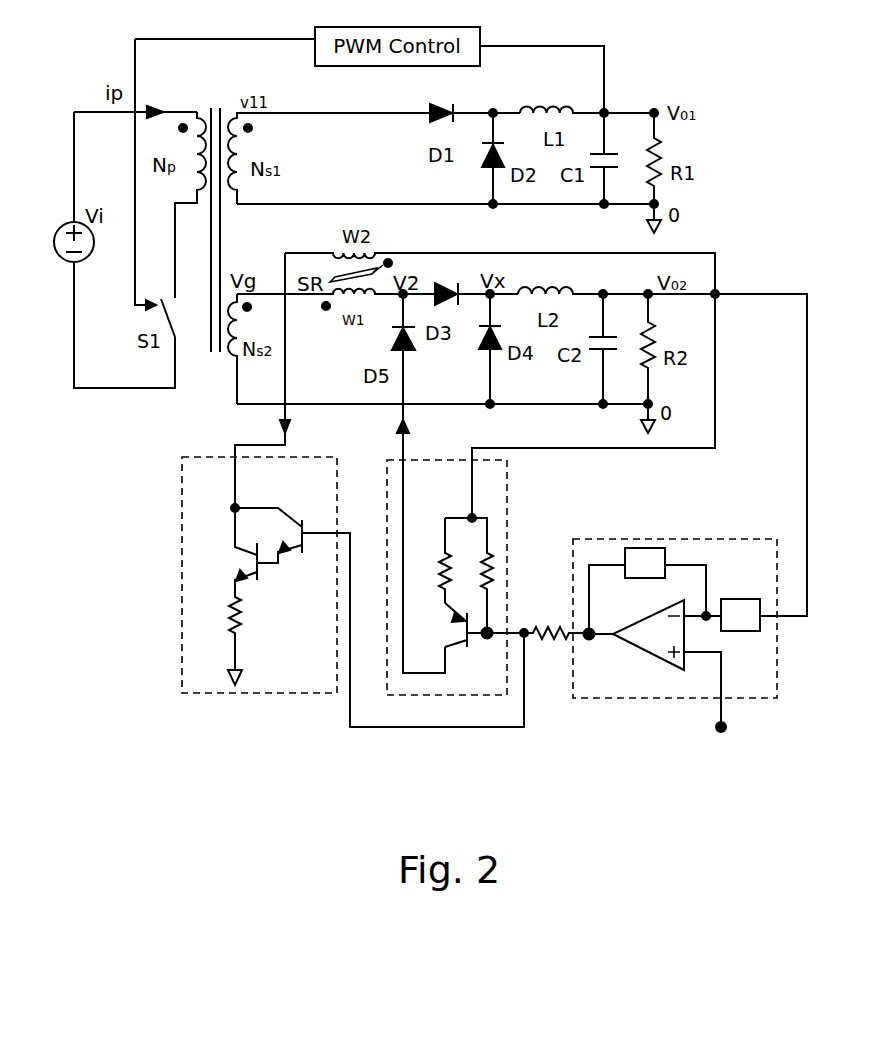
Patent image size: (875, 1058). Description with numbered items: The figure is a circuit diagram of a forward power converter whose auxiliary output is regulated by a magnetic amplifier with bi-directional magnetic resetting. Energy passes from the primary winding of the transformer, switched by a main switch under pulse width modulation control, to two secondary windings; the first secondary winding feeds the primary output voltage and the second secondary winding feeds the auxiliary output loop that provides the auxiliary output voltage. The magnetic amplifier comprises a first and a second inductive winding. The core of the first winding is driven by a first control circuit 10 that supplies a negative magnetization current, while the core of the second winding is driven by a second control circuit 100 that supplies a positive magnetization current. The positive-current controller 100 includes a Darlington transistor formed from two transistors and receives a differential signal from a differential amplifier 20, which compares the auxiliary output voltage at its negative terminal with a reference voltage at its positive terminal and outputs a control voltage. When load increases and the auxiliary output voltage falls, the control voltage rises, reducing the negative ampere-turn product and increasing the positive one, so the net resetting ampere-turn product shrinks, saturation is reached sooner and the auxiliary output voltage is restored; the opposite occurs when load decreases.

The second control circuit 100 is at (165, 530).
The first control circuit 10 is at (516, 531).
The differential amplifier 20 is at (788, 668).